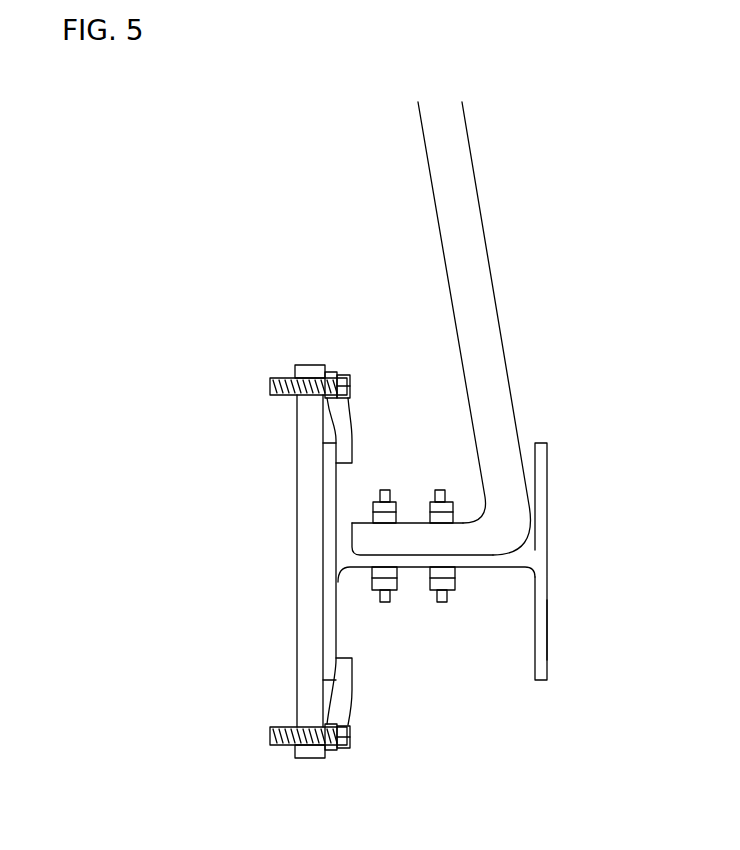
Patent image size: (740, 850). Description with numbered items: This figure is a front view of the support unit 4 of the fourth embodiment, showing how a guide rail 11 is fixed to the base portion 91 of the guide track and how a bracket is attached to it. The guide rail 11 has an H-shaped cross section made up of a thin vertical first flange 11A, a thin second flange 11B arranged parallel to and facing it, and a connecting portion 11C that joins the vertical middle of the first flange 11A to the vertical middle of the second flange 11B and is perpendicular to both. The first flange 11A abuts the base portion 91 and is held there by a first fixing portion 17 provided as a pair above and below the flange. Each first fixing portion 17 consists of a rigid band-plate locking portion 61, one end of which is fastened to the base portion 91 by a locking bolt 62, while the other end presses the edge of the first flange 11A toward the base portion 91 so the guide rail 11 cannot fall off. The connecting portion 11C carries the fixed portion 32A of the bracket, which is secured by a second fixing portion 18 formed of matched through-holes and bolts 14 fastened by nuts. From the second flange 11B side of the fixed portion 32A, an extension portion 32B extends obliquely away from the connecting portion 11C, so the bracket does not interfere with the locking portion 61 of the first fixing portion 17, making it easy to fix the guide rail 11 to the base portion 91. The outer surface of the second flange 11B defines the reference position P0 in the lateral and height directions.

The support unit 4 is at (202, 143).
The guide rail 11 is at (541, 681).
The first flange 11A is at (333, 486).
The second flange 11B is at (541, 470).
The connecting portion 11C is at (355, 570).
The bolt 14 is at (455, 583).
The second fixing portion 18 is at (387, 512).
The first fixing portion 17 is at (382, 288).
The locking portion 61 is at (333, 372).
The locking bolt 62 is at (350, 378).
The base portion 91 is at (297, 372).
The fixed portion 32A is at (363, 540).
The extension portion 32B is at (478, 270).
The reference position P0 is at (548, 627).